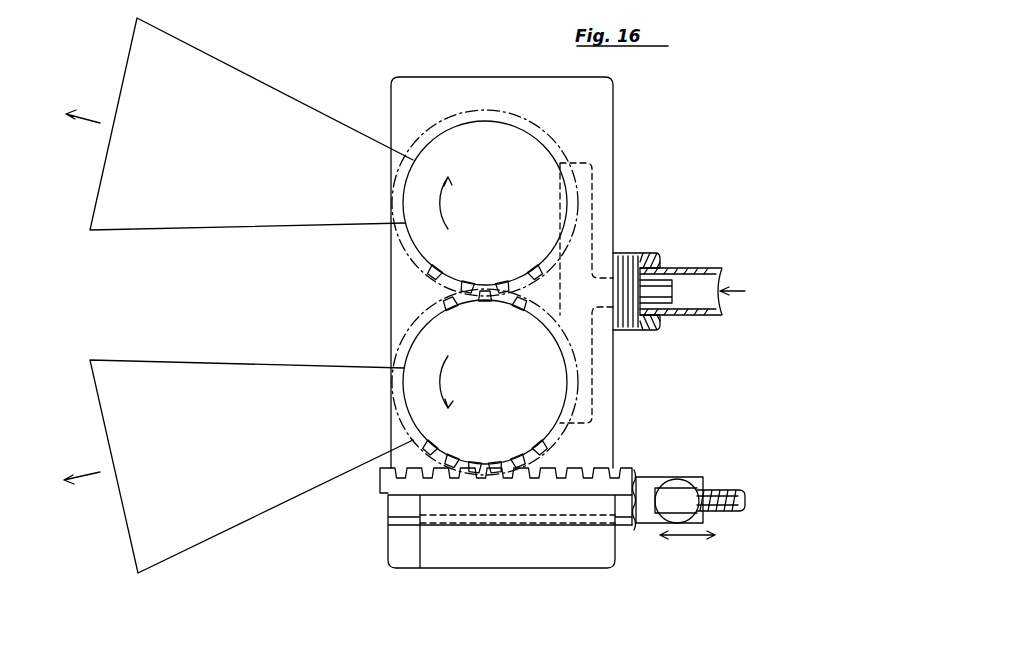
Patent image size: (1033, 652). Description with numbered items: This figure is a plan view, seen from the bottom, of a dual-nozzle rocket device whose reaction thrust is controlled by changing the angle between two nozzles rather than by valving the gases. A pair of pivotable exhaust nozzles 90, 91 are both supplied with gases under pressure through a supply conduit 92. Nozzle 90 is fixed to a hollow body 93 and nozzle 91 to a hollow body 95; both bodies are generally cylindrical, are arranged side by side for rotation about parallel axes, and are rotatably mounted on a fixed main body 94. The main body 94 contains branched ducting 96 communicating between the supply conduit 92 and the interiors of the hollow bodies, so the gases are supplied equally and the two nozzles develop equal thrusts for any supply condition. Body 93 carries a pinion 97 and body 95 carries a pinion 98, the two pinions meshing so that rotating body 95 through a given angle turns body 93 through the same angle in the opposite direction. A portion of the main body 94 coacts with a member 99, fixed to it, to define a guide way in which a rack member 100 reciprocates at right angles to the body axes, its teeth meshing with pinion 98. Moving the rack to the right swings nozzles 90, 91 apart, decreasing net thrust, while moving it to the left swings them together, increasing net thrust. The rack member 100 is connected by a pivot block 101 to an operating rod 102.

The pivotable exhaust nozzle 90 is at (249, 83).
The pivotable exhaust nozzle 91 is at (252, 370).
The supply conduit 92 is at (695, 270).
The hollow body 93 is at (485, 203).
The main body 94 is at (613, 138).
The hollow body 95 is at (525, 397).
The branched ducting 96 is at (592, 222).
The pinion 97 is at (440, 288).
The pinion 98 is at (536, 459).
The member 99 is at (595, 564).
The rack member 100 is at (385, 508).
The pivot block 101 is at (681, 488).
The operating rod 102 is at (712, 497).